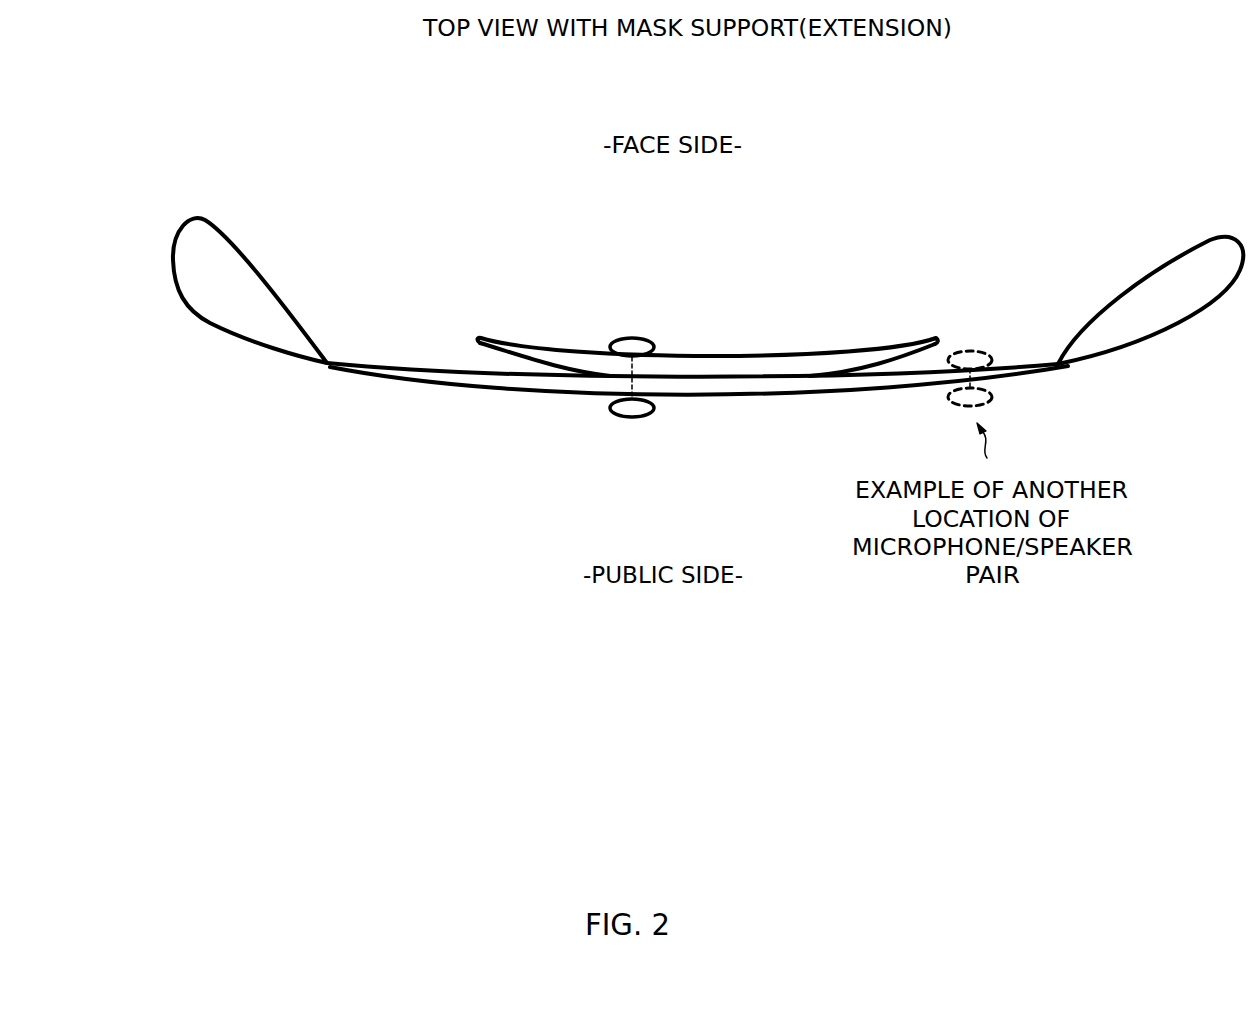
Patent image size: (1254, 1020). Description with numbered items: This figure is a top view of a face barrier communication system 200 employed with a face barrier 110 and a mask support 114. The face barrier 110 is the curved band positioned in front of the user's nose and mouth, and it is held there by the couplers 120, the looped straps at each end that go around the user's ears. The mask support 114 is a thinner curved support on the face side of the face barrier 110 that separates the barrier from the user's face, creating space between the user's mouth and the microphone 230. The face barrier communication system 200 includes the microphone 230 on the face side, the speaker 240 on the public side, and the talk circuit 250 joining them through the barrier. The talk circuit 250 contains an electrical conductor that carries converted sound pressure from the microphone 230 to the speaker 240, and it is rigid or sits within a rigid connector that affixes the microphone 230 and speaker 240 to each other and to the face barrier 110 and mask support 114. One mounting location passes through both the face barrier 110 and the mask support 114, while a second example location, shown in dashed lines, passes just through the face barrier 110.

The face barrier communication system 200 is at (508, 228).
The face barrier 110 is at (473, 395).
The couplers 120 is at (200, 318).
The mask support 114 is at (825, 353).
The microphone 230 is at (607, 340).
The speaker 240 is at (653, 420).
The talk circuit 250 is at (637, 377).